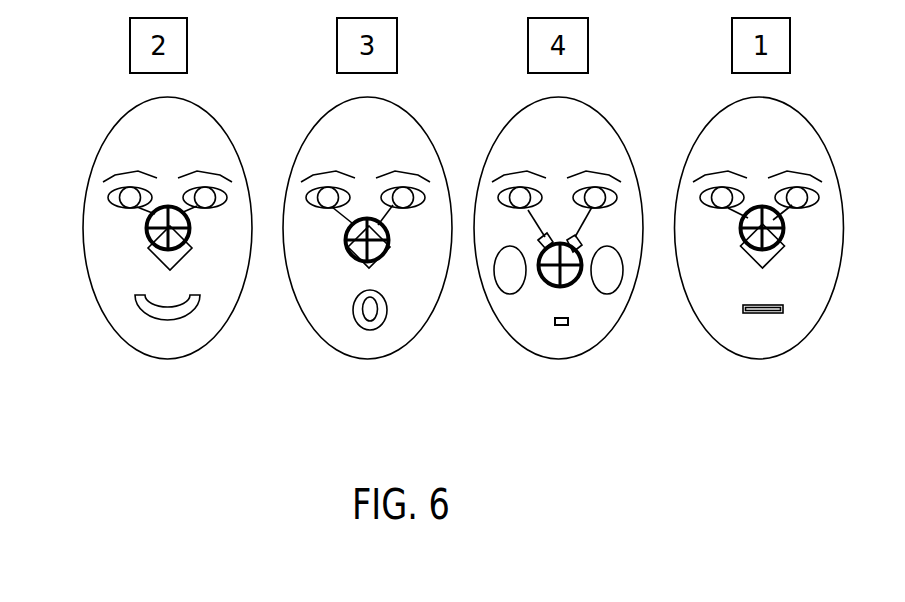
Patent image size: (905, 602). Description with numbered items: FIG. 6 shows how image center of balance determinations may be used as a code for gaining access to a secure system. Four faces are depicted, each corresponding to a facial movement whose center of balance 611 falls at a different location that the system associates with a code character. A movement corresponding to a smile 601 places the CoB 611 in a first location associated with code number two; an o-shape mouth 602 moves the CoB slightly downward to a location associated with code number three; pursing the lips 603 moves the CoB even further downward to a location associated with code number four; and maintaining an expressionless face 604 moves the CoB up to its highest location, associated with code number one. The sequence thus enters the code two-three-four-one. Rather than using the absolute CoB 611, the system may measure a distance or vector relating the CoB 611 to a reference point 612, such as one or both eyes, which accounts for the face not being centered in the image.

The smile 601 is at (163, 320).
The o-shape mouth 602 is at (363, 330).
The pursed lips 603 is at (560, 326).
The expressionless face 604 is at (750, 314).
The center of balance 611 is at (147, 228).
The reference point 612 is at (108, 198).